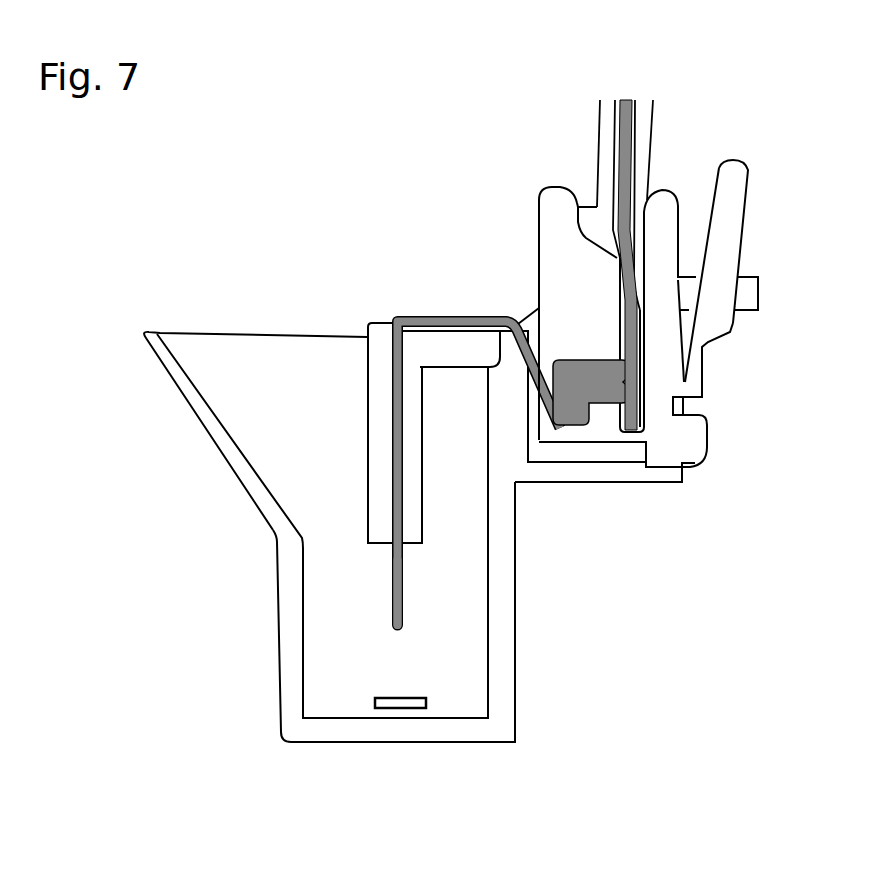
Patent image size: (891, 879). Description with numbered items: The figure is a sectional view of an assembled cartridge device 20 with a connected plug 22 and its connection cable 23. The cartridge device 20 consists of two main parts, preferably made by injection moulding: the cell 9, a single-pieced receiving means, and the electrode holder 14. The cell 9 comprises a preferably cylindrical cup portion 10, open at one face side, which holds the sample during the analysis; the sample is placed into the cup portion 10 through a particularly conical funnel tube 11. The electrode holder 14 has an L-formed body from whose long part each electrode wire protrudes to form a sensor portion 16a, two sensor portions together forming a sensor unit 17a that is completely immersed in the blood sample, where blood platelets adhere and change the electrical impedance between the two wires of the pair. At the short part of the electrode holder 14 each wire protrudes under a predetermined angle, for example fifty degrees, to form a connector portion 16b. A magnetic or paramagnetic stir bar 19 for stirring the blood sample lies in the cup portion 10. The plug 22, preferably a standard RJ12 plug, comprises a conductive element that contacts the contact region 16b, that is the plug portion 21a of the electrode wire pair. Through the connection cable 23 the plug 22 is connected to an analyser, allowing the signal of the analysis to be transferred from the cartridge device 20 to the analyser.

The cell 9 is at (248, 485).
The cup portion 10 is at (458, 648).
The funnel tube 11 is at (232, 362).
The electrode holder 14 is at (378, 312).
The sensor portion 16a is at (395, 632).
The connector portion 16b is at (550, 437).
The sensor unit 17a is at (385, 618).
The stir bar 19 is at (427, 708).
The cartridge device 20 is at (260, 303).
The plug portion 21a is at (560, 433).
The plug 22 is at (581, 390).
The connection cable 23 is at (635, 120).